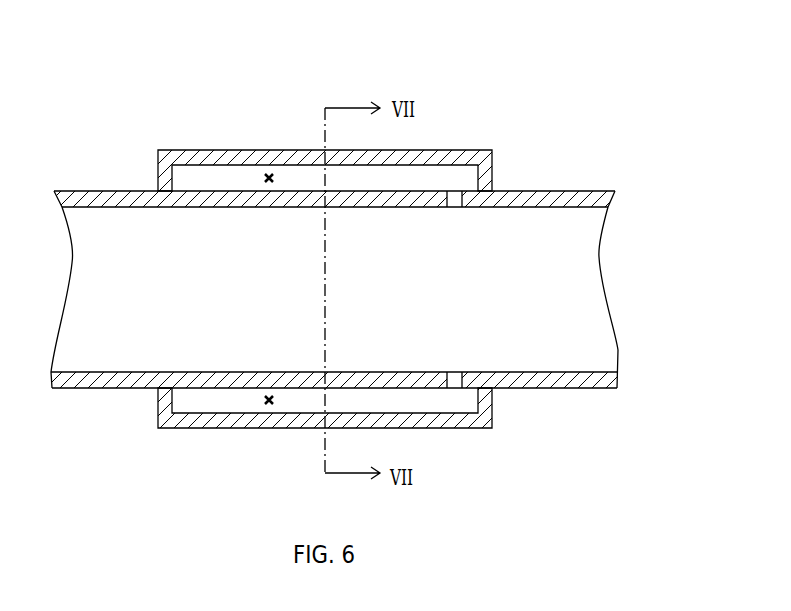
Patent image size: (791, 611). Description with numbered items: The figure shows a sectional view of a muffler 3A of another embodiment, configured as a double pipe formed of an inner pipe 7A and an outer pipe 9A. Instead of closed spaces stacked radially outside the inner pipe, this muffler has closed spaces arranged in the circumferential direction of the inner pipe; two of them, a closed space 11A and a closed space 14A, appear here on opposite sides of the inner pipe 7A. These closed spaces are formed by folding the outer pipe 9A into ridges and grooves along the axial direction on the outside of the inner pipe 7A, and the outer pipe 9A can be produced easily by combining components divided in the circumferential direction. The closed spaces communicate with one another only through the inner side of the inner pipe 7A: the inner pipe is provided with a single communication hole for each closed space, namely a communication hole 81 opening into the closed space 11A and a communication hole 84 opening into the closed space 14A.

The muffler 3A is at (613, 104).
The pipe 7A is at (117, 191).
The cover member 9A is at (212, 150).
The closed space 11A is at (269, 174).
The closed space 14A is at (269, 405).
The communication hole 81 is at (455, 198).
The communication hole 84 is at (455, 383).